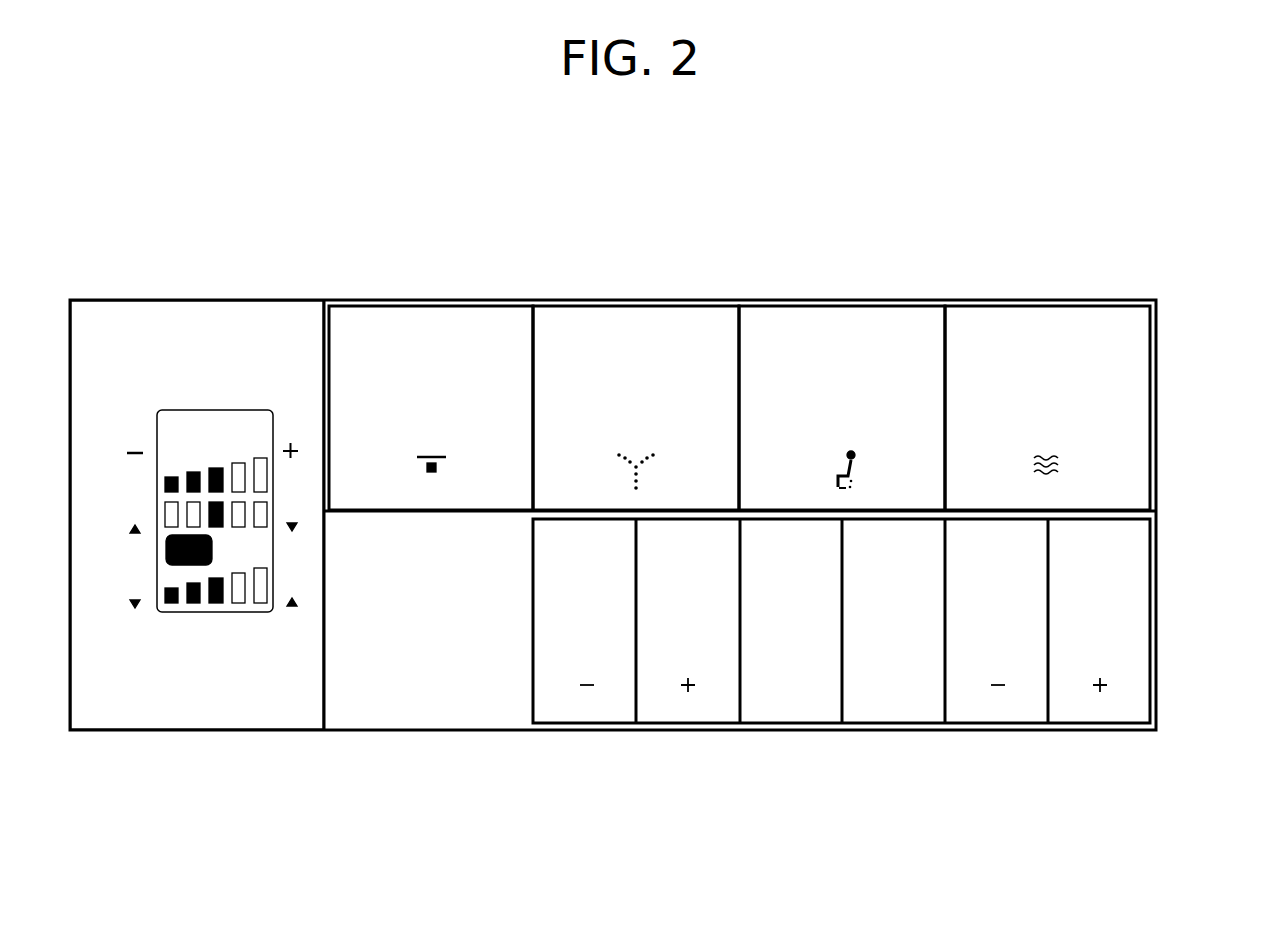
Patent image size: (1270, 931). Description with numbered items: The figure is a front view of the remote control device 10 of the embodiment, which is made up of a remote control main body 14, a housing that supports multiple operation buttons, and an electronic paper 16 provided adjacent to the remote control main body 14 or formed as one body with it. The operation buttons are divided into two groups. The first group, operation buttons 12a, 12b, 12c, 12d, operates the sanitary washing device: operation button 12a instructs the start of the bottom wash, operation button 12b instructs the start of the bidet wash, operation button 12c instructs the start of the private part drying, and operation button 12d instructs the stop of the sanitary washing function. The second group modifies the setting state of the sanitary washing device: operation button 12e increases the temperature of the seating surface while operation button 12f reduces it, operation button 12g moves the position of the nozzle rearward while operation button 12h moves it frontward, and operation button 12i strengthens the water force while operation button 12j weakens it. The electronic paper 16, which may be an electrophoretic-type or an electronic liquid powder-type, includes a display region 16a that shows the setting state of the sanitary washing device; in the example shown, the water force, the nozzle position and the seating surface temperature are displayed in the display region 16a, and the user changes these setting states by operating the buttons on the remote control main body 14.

The remote control device 10 is at (1073, 185).
The operation button 12a is at (635, 335).
The operation button 12b is at (840, 335).
The operation button 12c is at (1045, 335).
The operation button 12d is at (430, 335).
The operation button 12e is at (1100, 708).
The operation button 12f is at (1000, 708).
The operation button 12g is at (893, 708).
The operation button 12h is at (791, 708).
The operation button 12i is at (690, 708).
The operation button 12j is at (587, 708).
The remote control main body 14 is at (1157, 407).
The electronic paper 16 is at (214, 335).
The display region 16a is at (205, 600).